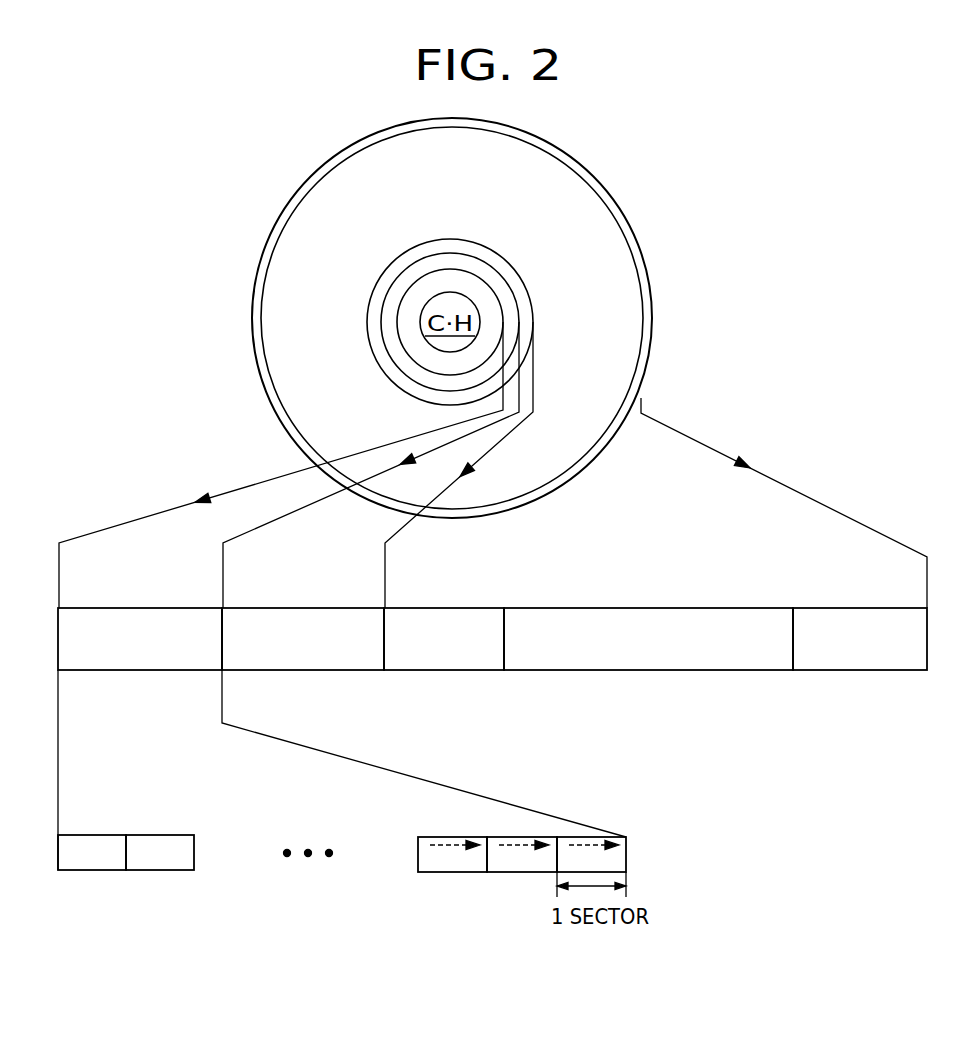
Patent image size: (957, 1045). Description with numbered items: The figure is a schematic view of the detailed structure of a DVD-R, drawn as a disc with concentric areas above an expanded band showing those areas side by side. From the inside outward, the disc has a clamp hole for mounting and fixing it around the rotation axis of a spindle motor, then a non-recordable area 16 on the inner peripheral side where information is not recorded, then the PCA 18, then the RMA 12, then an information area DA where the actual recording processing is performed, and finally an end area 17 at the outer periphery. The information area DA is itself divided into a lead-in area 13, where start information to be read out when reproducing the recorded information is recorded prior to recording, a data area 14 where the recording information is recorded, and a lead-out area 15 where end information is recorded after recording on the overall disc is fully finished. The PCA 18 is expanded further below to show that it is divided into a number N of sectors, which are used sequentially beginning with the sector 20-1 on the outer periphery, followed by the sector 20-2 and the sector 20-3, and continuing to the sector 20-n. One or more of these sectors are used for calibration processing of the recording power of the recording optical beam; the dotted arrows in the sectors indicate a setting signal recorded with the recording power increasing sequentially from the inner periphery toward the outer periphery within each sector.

The RMA 12 is at (518, 282).
The lead-in area 13 is at (475, 671).
The data area 14 is at (775, 671).
The lead-out area 15 is at (897, 671).
The non-recordable area 16 is at (458, 280).
The end area 17 is at (646, 305).
The PCA 18 is at (492, 277).
The information area DA is at (607, 263).
The sector 20-1 is at (627, 845).
The sector 20-2 is at (497, 873).
The sector 20-3 is at (465, 835).
The sector 20-n is at (97, 835).